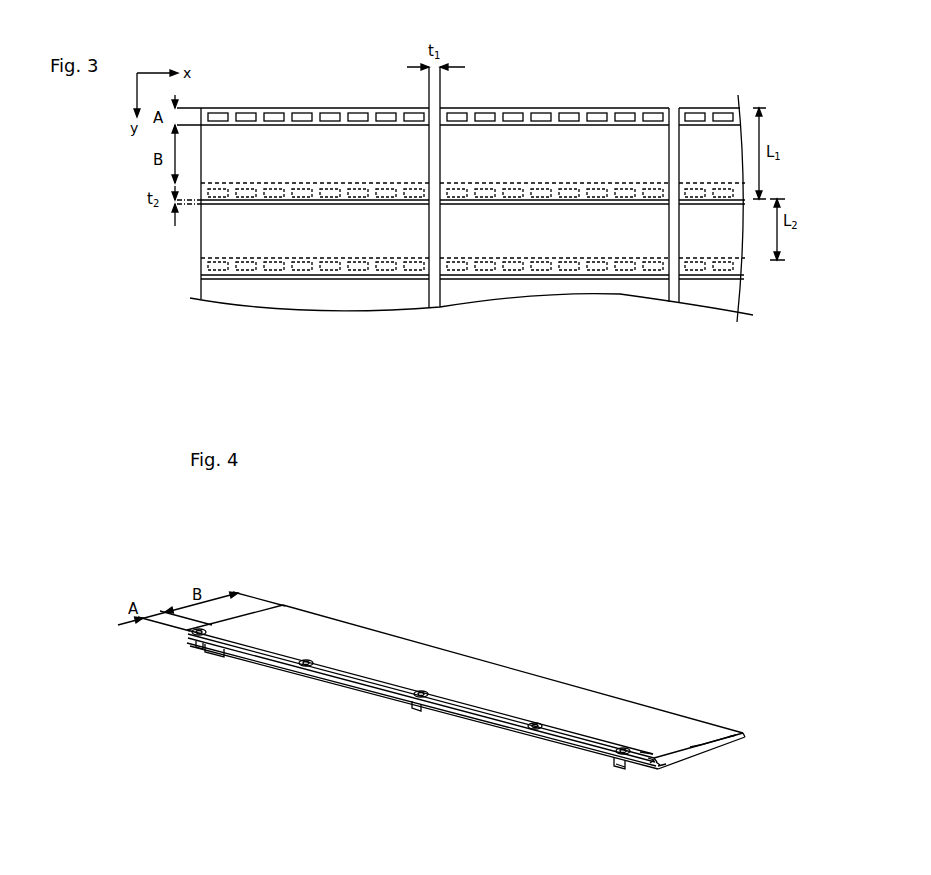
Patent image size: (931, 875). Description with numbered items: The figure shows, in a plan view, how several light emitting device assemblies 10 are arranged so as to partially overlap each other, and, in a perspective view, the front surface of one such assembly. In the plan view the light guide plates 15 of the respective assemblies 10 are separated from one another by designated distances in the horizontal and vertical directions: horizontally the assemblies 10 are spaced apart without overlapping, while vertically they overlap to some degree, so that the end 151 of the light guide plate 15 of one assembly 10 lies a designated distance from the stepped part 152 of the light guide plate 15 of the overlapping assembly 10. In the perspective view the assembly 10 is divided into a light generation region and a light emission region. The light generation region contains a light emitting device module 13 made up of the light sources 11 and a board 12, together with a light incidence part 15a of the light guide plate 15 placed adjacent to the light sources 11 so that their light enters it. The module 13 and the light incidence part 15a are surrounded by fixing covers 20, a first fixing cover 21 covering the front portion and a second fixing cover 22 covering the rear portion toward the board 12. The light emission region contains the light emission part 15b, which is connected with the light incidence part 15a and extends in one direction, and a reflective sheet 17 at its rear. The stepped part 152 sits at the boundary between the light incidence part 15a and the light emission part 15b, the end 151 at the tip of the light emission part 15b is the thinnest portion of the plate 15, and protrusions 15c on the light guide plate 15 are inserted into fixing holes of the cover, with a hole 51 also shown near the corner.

In FIG. 3, the light emitting device assembly 10 is at (368, 146).
In FIG. 4, the light emitting device assembly 10 is at (428, 625).
In FIG. 3, the light sources 11 is at (327, 106).
In FIG. 4, the light sources 11 is at (657, 762).
In FIG. 4, the board 12 is at (666, 765).
In FIG. 4, the light emitting device module 13 is at (725, 826).
In FIG. 3, the light guide plate 15 is at (260, 140).
In FIG. 4, the light guide plate 15 is at (712, 668).
In FIG. 4, the light incidence part 15a is at (655, 757).
In FIG. 4, the light emission part 15b is at (700, 744).
In FIG. 4, the protrusions 15c is at (425, 700).
In FIG. 4, the reflective sheet 17 is at (732, 742).
In FIG. 4, the fixing covers 20 is at (657, 810).
In FIG. 4, the first fixing cover 21 is at (626, 768).
In FIG. 4, the second fixing cover 22 is at (654, 762).
In FIG. 4, the fixing hole 51 is at (621, 748).
In FIG. 3, the end 151 is at (692, 202).
In FIG. 4, the end 151 is at (503, 663).
In FIG. 3, the stepped part 152 is at (727, 205).
In FIG. 4, the stepped part 152 is at (383, 676).